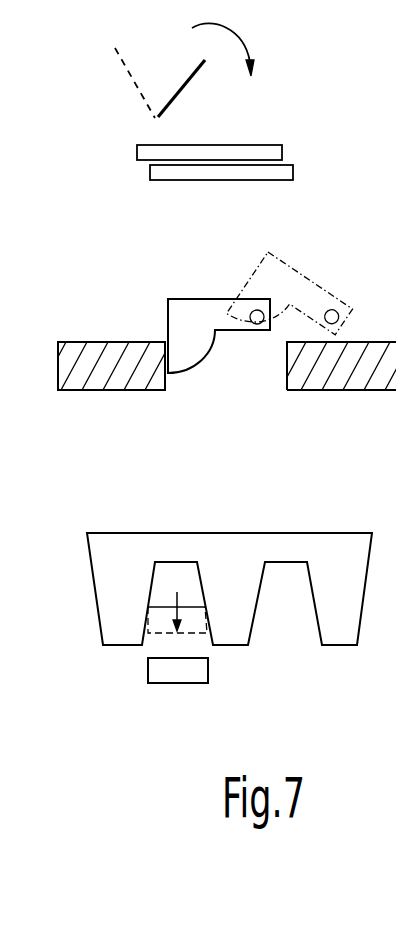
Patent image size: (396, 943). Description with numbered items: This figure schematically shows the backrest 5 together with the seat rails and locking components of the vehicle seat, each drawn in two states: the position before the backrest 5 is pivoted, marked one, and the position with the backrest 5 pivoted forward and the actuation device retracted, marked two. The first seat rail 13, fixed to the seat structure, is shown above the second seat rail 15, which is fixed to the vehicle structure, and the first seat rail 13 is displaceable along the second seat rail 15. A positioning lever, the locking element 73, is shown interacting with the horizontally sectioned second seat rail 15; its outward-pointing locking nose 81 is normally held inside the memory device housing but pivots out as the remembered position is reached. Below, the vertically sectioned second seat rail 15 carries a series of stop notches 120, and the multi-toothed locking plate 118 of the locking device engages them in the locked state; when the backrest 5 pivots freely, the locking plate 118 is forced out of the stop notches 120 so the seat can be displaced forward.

The backrest 5 is at (182, 87).
The first seat rail 13 is at (275, 152).
The second seat rail 15 is at (290, 170).
The locking element 73 is at (310, 293).
The locking nose 81 is at (188, 353).
The locking plate 118 is at (173, 673).
The stop notch 120 is at (272, 382).